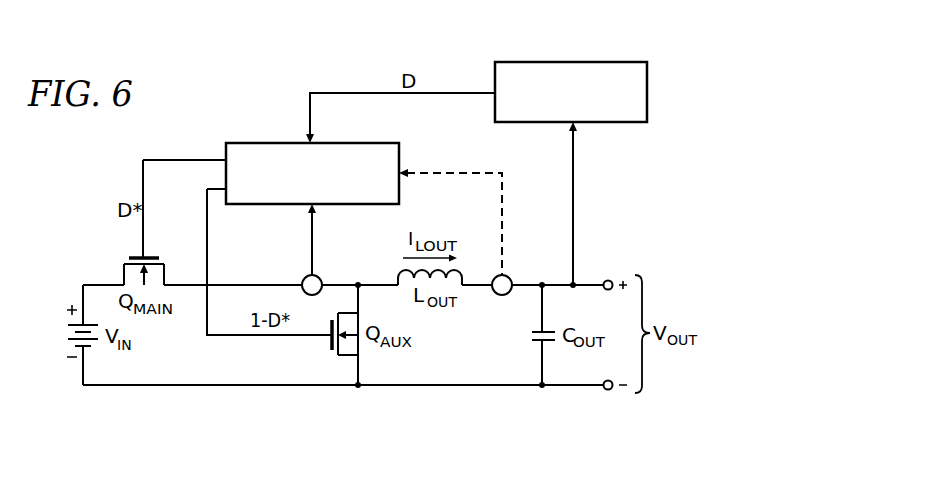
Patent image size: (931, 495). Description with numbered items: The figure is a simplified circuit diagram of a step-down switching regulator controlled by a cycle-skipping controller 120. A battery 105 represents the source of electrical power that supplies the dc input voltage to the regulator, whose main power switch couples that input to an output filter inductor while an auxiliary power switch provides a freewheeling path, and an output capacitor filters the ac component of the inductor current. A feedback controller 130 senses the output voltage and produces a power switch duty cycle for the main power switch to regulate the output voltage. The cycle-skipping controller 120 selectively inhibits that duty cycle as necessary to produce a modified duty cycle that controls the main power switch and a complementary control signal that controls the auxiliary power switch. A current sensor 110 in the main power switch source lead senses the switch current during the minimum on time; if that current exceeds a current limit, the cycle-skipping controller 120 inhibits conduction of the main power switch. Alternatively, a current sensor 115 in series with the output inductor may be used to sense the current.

The battery 105 is at (65, 333).
The current sensor 110 is at (305, 277).
The current sensor 115 is at (510, 276).
The cycle-skipping controller 120 is at (267, 143).
The feedback controller 130 is at (582, 62).